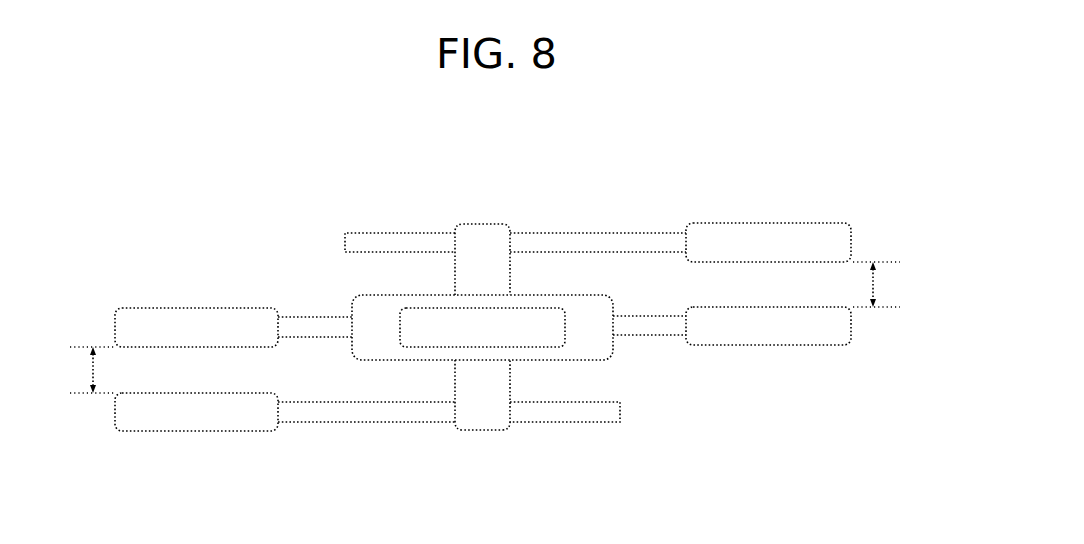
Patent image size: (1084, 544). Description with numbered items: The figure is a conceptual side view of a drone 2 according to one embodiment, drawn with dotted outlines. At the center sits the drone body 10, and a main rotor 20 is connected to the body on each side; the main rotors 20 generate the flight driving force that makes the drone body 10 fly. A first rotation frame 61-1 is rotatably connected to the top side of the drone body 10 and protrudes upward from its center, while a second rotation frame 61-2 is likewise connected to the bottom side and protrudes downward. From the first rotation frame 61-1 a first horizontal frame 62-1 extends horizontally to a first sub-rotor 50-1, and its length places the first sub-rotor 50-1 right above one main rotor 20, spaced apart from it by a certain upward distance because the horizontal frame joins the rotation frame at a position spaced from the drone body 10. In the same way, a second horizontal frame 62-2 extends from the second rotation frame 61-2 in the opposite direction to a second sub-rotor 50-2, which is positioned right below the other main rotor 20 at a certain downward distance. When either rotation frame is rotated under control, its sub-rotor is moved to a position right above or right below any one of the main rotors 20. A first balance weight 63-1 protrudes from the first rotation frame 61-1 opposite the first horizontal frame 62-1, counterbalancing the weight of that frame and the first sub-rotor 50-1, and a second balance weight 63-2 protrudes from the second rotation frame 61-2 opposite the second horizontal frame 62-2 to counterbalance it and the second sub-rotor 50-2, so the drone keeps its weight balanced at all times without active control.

The bending sensor 2 is at (348, 187).
The drone body 10 is at (613, 343).
The main rotor 20 is at (851, 332).
The first sub-rotor 50-1 is at (853, 230).
The second sub-rotor 50-2 is at (200, 432).
The first rotation frame 61-1 is at (488, 223).
The second rotation frame 61-2 is at (482, 432).
The first horizontal frame 62-1 is at (592, 233).
The second horizontal frame 62-2 is at (390, 423).
The first balance weight 63-1 is at (345, 243).
The second balance weight 63-2 is at (621, 412).